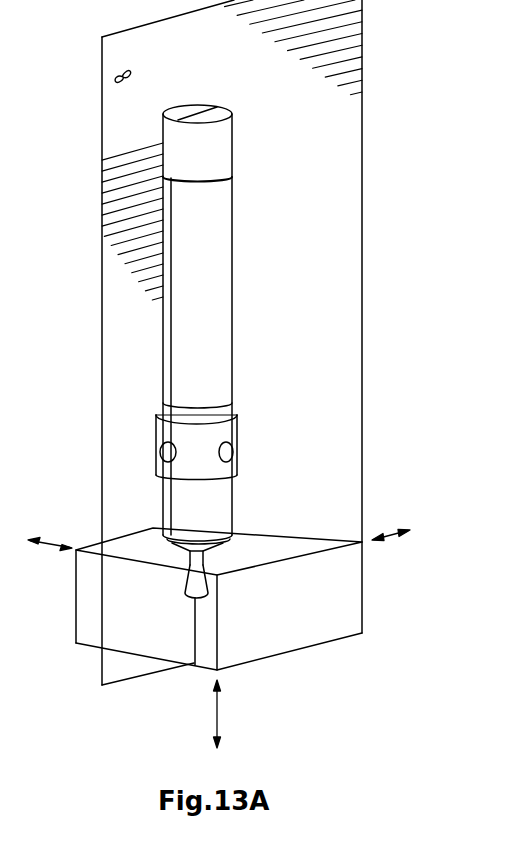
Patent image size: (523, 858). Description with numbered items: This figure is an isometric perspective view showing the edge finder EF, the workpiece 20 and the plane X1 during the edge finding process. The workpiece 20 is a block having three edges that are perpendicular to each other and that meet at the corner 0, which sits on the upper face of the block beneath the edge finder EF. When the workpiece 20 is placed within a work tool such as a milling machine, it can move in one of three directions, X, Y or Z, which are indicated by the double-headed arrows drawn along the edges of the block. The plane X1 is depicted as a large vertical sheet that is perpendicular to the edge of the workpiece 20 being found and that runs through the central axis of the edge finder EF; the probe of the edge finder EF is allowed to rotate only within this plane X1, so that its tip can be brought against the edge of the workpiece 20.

The edge finder EF is at (238, 204).
The workpiece 20 is at (298, 660).
The plane X1 is at (121, 78).
The origin of the workpiece edges 0 is at (218, 621).
The X direction X is at (393, 544).
The Y direction Y is at (48, 554).
The Z direction Z is at (232, 716).